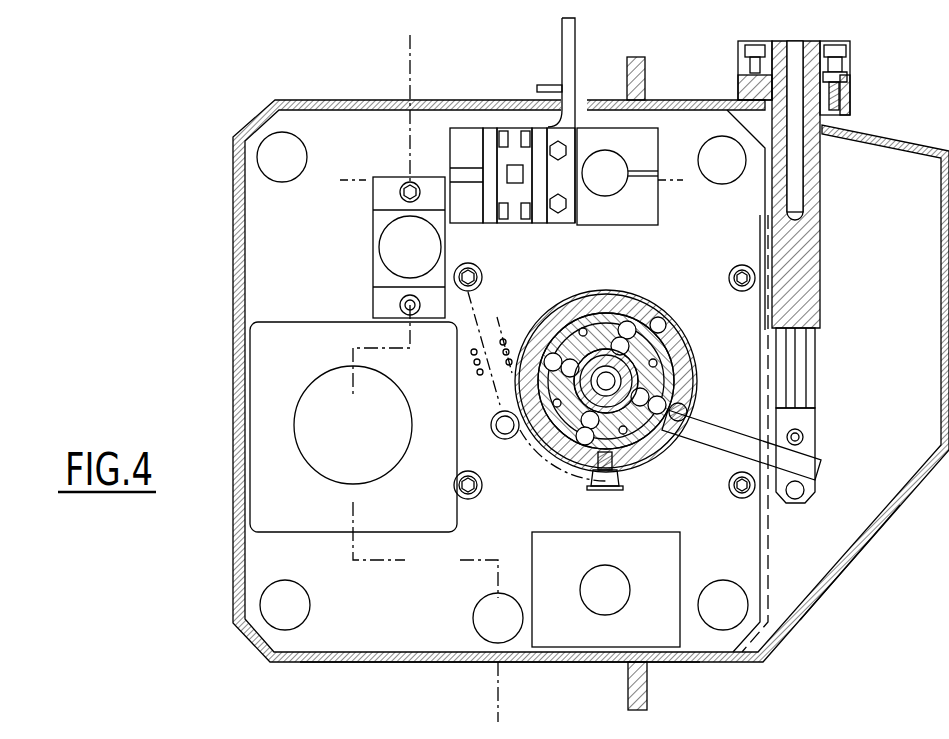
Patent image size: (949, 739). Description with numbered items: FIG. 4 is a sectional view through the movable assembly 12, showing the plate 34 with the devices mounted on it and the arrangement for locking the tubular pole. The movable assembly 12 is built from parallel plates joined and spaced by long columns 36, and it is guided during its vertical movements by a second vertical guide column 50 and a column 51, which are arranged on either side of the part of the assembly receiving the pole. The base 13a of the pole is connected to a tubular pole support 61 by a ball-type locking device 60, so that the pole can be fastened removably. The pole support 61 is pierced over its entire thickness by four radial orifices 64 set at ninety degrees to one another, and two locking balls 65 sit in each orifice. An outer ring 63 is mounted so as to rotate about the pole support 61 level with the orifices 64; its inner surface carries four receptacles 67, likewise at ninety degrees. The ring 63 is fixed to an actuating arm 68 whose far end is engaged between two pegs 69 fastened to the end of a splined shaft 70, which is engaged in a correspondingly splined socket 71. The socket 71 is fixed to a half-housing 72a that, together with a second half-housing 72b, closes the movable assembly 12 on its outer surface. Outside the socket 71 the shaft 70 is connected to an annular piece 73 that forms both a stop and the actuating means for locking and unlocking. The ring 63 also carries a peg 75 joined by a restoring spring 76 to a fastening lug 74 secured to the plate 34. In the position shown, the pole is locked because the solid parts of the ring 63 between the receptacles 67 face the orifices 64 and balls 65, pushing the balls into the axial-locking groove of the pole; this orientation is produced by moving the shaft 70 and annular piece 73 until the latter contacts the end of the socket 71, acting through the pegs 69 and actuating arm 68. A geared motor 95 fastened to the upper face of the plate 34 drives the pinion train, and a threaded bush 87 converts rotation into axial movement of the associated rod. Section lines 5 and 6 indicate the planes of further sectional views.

The section line 5- 5 is at (362, 45).
The section line 6- 6 is at (340, 215).
The movable assembly 12 is at (886, 131).
The base of the pole 13a is at (600, 362).
The plate 34 is at (745, 240).
The long columns 36 is at (723, 590).
The second vertical guide column 50 is at (605, 168).
The column 51 is at (600, 600).
The ball-type locking device 60 is at (616, 383).
The pole support 61 is at (662, 350).
The outer ring 63 is at (542, 328).
The radial orifices 64 is at (660, 448).
The locking balls 65 is at (582, 428).
The receptacles 67 is at (583, 330).
The actuating arm 68 is at (732, 432).
The pegs 69 is at (805, 490).
The splined shaft 70 is at (806, 282).
The socket 71 is at (740, 92).
The half-housing 72a is at (366, 664).
The second half-housing 72b is at (845, 583).
The annular piece 73 is at (848, 68).
The fastening lug 74 is at (476, 272).
The peg 75 is at (620, 487).
The restoring spring 76 is at (503, 393).
The threaded bush 87 is at (625, 374).
The geared motor 95 is at (353, 427).